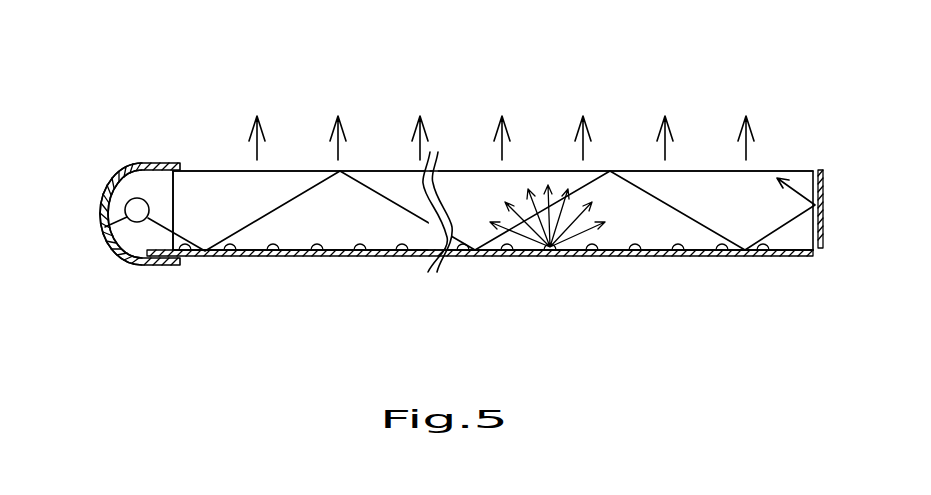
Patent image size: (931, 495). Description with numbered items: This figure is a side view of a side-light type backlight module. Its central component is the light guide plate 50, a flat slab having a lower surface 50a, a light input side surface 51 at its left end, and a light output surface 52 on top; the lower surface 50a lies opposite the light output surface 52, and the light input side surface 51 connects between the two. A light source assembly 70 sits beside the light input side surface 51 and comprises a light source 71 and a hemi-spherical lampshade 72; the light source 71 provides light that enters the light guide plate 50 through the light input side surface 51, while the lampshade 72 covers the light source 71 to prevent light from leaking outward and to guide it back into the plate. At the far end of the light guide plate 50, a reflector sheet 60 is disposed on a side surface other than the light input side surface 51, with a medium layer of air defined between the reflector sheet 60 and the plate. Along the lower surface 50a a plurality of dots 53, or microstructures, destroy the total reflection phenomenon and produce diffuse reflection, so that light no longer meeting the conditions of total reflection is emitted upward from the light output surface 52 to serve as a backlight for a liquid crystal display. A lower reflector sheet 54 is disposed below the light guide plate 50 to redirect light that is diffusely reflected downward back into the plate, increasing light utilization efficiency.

The light guide plate 50 is at (214, 128).
The lower surface 50a is at (237, 254).
The light input side surface 51 is at (172, 197).
The light output surface 52 is at (778, 170).
The dots 53 is at (318, 256).
The lower reflector sheet 54 is at (620, 255).
The reflector sheet 60 is at (825, 236).
The light source assembly 70 is at (116, 271).
The light source 71 is at (100, 240).
The lampshade 72 is at (107, 165).